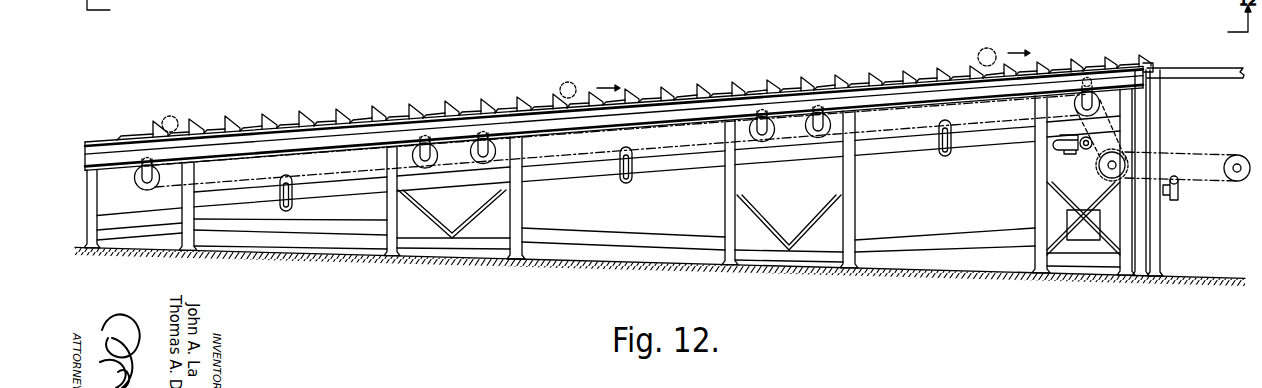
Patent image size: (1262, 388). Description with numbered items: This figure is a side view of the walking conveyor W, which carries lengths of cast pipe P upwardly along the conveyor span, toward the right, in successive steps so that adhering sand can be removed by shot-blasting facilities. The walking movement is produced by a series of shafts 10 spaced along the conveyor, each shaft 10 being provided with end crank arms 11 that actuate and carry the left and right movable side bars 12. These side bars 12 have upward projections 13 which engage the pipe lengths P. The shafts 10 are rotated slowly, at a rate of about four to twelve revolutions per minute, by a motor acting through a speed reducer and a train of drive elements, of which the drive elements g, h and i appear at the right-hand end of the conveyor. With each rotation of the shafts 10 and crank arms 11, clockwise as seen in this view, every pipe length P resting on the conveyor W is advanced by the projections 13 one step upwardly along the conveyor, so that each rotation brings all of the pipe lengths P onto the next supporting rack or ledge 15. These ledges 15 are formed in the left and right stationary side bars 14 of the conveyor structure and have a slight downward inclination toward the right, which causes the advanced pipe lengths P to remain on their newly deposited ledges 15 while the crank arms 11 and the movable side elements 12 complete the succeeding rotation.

The shaft 10 is at (134, 181).
The end crank arm 11 is at (157, 168).
The side bar 12 is at (143, 136).
The upward projection 13 is at (191, 120).
The stationary side bar 14 is at (86, 141).
The supporting ledge 15 is at (323, 117).
The pipe length P is at (174, 116).
The walking conveyor W is at (682, 86).
The drive element i is at (1082, 103).
The drive element h is at (1100, 168).
The drive element g is at (1236, 182).